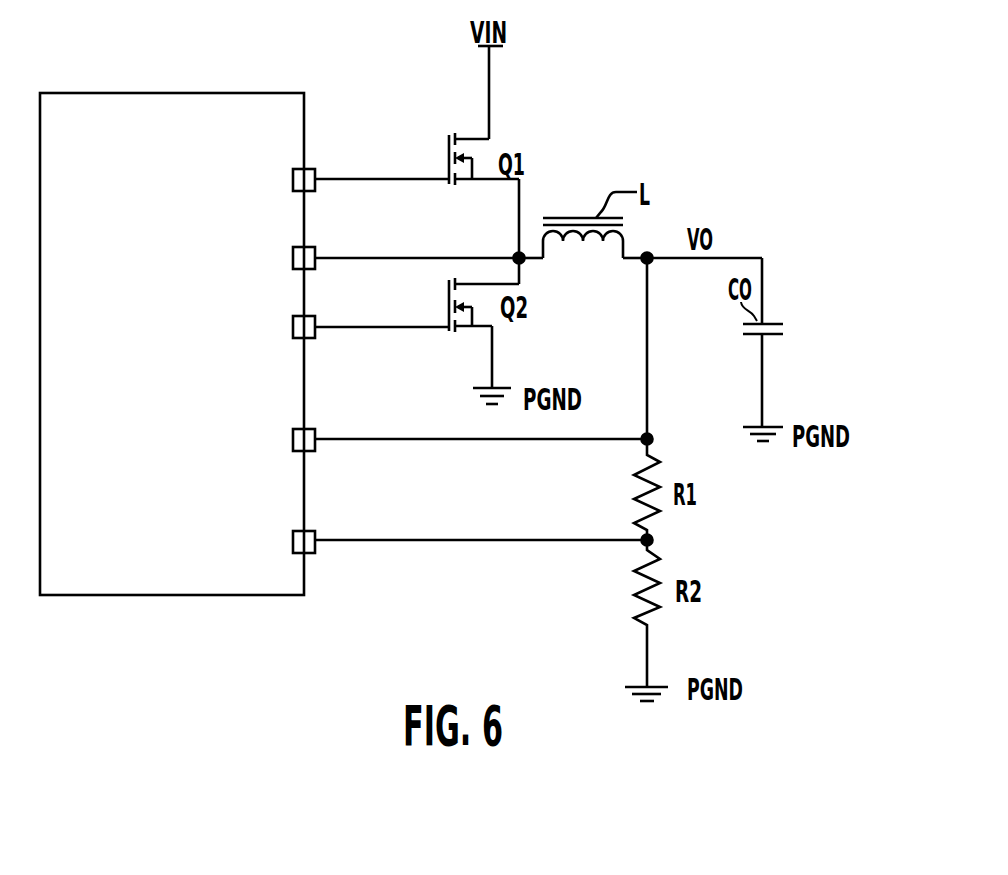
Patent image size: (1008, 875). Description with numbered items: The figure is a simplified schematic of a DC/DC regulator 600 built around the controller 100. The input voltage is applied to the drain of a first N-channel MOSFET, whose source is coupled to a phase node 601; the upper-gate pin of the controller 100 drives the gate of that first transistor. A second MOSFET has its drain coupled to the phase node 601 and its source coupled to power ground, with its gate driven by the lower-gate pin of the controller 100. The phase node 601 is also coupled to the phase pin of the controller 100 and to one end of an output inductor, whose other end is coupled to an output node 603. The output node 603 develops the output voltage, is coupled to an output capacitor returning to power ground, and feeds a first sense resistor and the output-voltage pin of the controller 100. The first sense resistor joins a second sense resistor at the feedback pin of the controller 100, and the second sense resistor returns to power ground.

The DC/DC regulator 600 is at (612, 84).
The phase node 601 is at (517, 258).
The output node 603 is at (649, 258).
The controller 100 is at (192, 578).